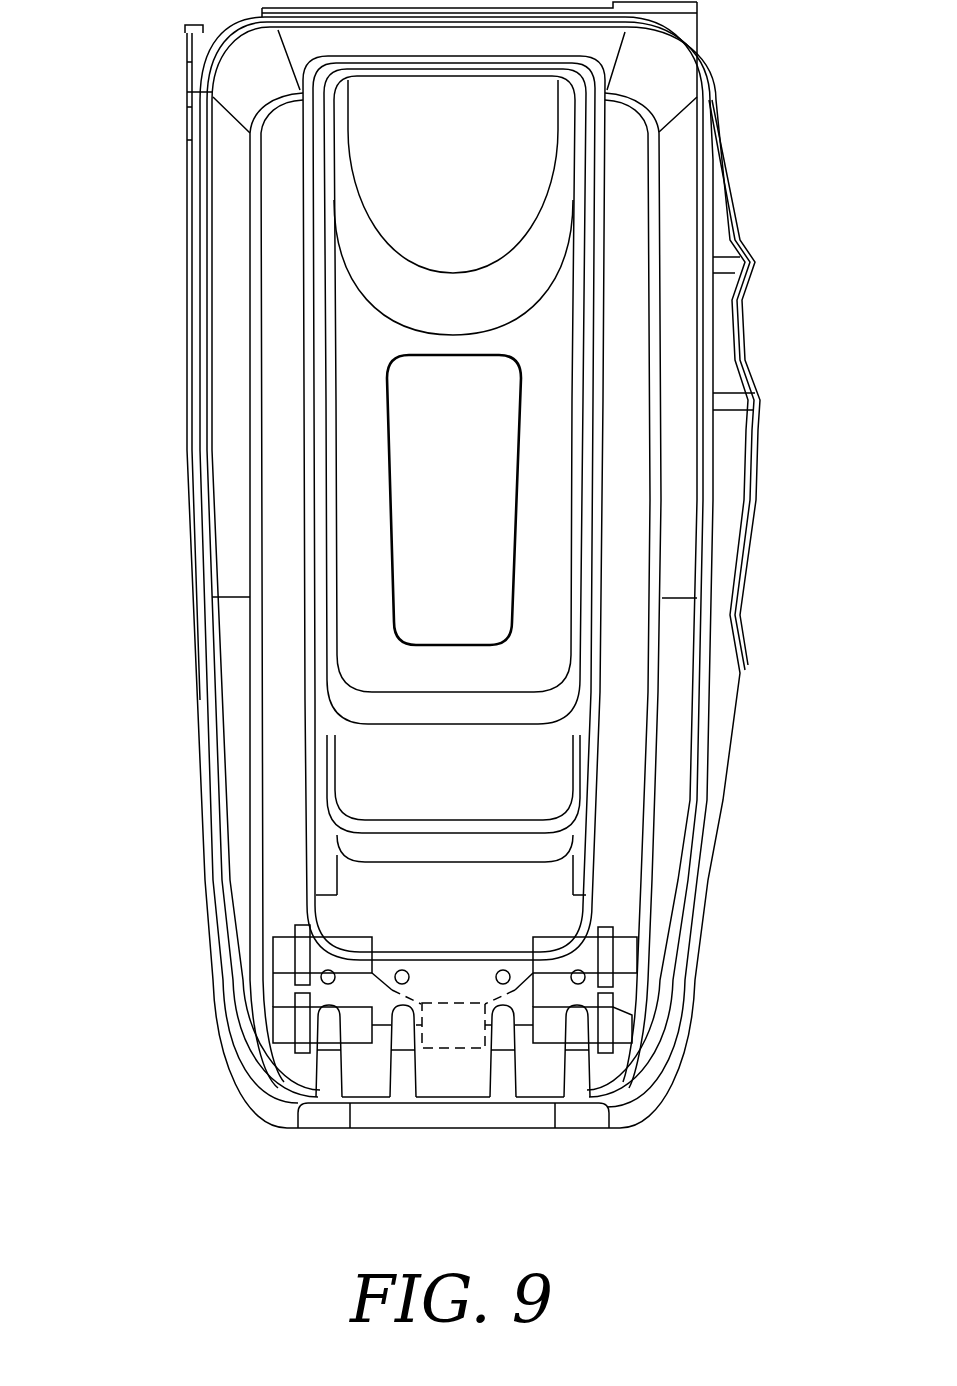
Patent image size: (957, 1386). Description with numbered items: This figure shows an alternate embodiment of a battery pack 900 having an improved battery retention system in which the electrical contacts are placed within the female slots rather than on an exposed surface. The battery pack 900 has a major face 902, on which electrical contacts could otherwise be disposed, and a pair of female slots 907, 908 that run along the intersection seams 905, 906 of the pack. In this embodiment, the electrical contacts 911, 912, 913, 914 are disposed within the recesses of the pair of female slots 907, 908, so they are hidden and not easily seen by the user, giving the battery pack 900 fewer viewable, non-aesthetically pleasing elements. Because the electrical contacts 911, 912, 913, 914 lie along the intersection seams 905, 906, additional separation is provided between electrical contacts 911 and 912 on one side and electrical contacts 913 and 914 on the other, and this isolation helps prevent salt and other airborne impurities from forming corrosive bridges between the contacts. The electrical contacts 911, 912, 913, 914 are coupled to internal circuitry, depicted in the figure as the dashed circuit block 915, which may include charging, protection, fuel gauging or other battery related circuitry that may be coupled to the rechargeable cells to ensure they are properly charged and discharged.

The battery pack 900 is at (481, 500).
The major face 902 is at (450, 773).
The intersection seam 905 is at (690, 476).
The intersection seam 906 is at (217, 477).
The female slot 907 is at (275, 910).
The female slot 908 is at (655, 912).
The electrical contact 911 is at (273, 973).
The electrical contact 912 is at (279, 1008).
The electrical contact 913 is at (628, 1010).
The electrical contact 914 is at (637, 973).
The circuit 915 is at (457, 1048).